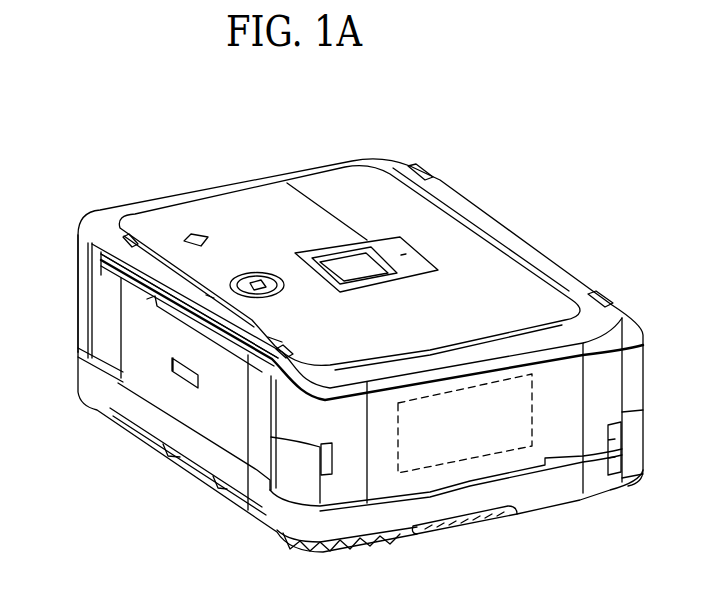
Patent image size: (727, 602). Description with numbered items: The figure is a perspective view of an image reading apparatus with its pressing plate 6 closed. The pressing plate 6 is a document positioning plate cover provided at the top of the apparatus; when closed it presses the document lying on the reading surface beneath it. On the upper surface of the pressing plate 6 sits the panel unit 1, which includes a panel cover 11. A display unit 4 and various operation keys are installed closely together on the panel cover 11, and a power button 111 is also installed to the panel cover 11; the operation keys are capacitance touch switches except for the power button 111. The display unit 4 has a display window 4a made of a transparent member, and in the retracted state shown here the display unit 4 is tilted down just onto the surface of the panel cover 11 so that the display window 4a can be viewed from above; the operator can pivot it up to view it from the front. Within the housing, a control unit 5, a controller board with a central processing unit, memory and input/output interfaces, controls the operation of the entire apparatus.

The panel unit 1 is at (256, 204).
The panel cover 11 is at (218, 212).
The power button 111 is at (188, 237).
The display unit 4 is at (362, 245).
The display window 4a is at (377, 257).
The control unit 5 is at (503, 433).
The pressing plate 6 is at (90, 251).